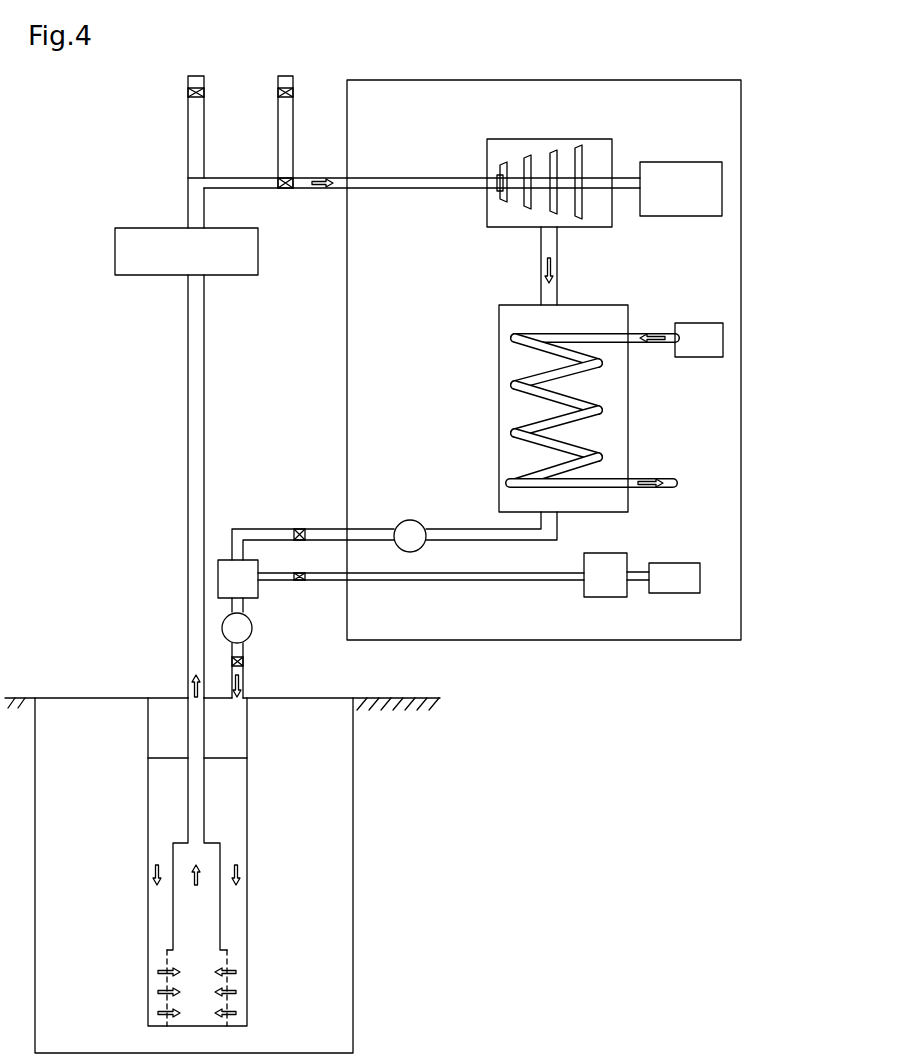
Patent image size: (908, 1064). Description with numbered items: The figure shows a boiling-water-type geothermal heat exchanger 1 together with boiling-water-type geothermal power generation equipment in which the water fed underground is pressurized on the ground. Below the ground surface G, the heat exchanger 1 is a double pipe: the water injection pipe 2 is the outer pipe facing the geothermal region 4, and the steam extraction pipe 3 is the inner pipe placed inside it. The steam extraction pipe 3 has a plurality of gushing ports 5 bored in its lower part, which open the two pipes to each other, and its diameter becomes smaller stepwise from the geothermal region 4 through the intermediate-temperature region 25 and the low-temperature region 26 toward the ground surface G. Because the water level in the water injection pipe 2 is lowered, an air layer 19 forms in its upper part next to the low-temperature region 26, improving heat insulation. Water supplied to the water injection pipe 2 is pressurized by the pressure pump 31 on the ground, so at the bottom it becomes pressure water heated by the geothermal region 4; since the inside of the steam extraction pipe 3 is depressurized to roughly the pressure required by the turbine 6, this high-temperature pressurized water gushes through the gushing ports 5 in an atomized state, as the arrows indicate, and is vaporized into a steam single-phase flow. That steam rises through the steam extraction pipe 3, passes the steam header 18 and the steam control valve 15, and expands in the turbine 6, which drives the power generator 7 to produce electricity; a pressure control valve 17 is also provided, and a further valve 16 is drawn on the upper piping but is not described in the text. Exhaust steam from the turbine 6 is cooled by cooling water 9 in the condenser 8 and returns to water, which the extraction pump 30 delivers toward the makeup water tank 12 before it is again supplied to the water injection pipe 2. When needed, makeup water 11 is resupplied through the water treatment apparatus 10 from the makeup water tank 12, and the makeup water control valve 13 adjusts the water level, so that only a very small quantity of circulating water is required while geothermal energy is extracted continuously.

The geothermal heat exchanger 1 is at (147, 669).
The water injection pipe 2 is at (240, 785).
The steam extraction pipe 3 is at (195, 800).
The geothermal region 4 is at (375, 983).
The gushing ports 5 is at (165, 988).
The turbine 6 is at (540, 148).
The power generator 7 is at (687, 180).
The condenser 8 is at (607, 403).
The cooling water 9 is at (695, 333).
The water treatment apparatus 10 is at (605, 588).
The makeup water 11 is at (687, 578).
The makeup water tank 12 is at (250, 590).
The makeup water control valve 13 is at (244, 661).
The steam control valve 15 is at (285, 190).
The production pipe valve 16 is at (204, 92).
The pressure control valve 17 is at (294, 90).
The steam header 18 is at (225, 262).
The air layer 19 is at (172, 740).
The intermediate-temperature region 25 is at (370, 913).
The low-temperature region 26 is at (370, 805).
The extraction pump 30 is at (410, 523).
The pressure pump 31 is at (252, 628).
The ground surface G is at (372, 693).